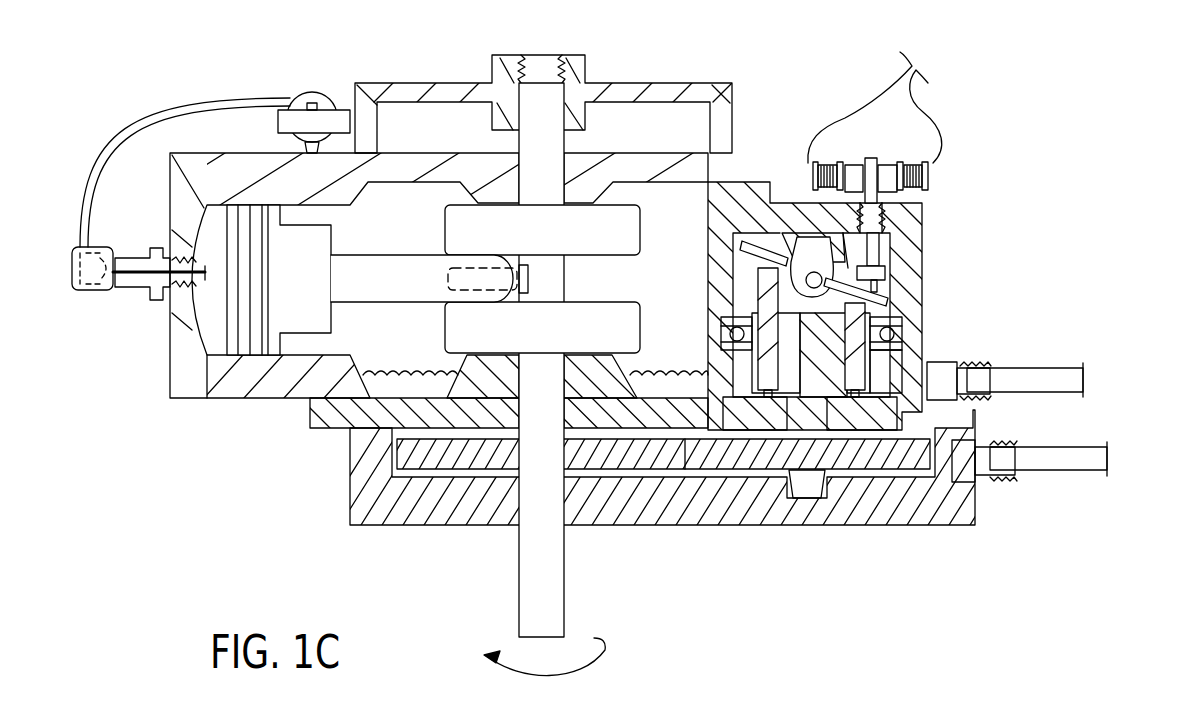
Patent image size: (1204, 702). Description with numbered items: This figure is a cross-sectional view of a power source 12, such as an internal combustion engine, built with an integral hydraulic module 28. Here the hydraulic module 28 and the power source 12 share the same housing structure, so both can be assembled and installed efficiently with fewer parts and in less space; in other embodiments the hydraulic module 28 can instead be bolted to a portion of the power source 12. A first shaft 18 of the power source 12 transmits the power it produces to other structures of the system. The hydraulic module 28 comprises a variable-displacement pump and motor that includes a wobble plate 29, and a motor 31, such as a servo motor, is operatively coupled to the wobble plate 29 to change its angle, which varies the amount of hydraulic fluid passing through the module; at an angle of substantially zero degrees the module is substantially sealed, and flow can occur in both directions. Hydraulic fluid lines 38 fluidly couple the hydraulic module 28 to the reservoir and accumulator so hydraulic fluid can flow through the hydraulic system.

The power source 12 is at (390, 83).
The first shaft 18 is at (567, 550).
The hydraulic module 28 is at (887, 305).
The wobble plate 29 is at (887, 301).
The motor 31 is at (907, 198).
The hydraulic fluid lines 38 is at (1027, 363).